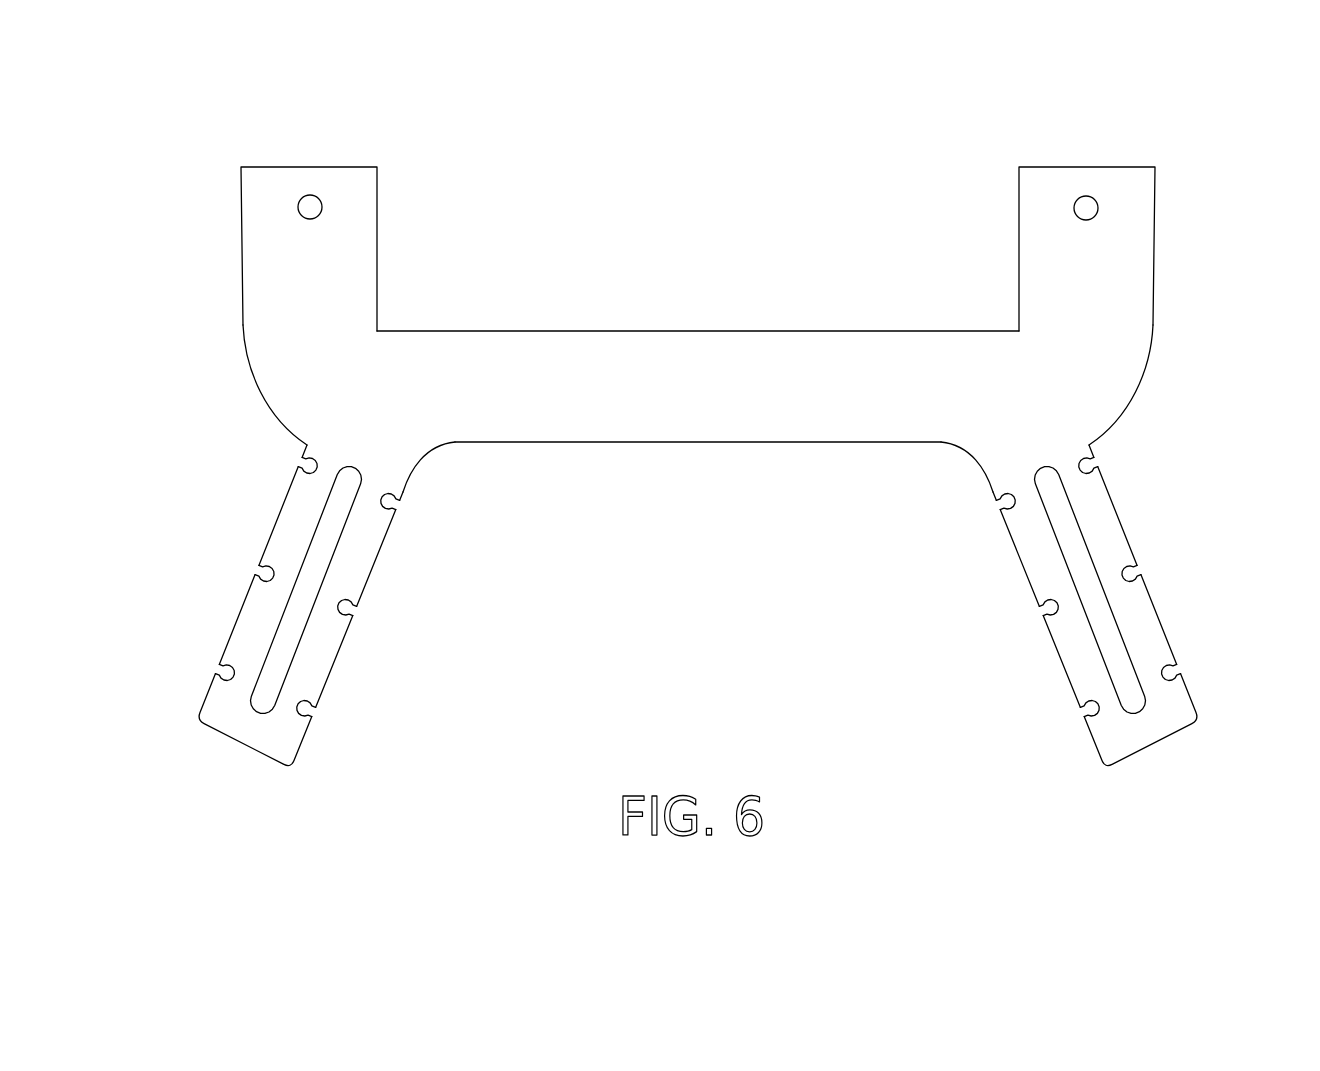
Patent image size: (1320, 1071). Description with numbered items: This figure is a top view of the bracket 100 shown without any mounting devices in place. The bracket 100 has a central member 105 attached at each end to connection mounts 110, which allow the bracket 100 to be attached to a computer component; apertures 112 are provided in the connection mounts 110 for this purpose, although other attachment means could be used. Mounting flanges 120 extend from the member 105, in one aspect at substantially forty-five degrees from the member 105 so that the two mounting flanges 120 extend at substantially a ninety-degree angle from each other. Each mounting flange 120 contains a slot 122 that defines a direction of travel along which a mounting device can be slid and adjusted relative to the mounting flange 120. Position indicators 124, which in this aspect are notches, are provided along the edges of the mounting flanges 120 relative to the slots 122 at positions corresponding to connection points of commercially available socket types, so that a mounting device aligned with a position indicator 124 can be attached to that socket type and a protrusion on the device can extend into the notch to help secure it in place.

The bracket 100 is at (694, 398).
The member 105 is at (703, 330).
The connection mounts 110 is at (241, 193).
The apertures 112 is at (306, 195).
The mounting flanges 120 is at (245, 617).
The slots 122 is at (320, 585).
The position indicators 124 is at (298, 464).